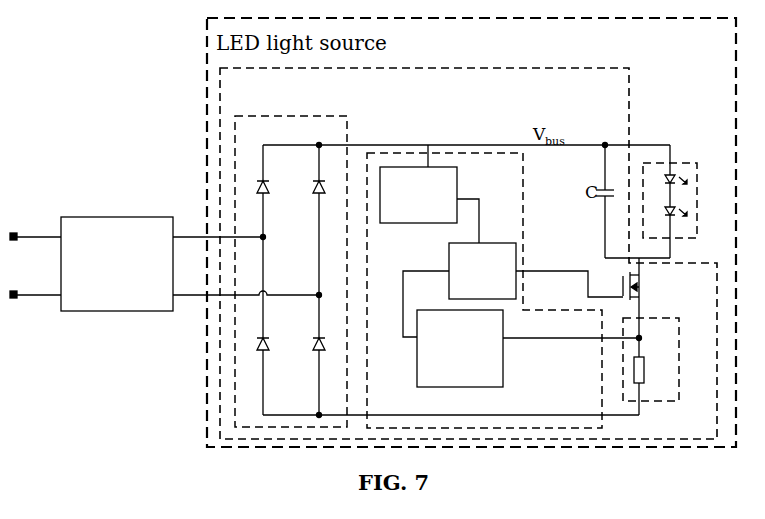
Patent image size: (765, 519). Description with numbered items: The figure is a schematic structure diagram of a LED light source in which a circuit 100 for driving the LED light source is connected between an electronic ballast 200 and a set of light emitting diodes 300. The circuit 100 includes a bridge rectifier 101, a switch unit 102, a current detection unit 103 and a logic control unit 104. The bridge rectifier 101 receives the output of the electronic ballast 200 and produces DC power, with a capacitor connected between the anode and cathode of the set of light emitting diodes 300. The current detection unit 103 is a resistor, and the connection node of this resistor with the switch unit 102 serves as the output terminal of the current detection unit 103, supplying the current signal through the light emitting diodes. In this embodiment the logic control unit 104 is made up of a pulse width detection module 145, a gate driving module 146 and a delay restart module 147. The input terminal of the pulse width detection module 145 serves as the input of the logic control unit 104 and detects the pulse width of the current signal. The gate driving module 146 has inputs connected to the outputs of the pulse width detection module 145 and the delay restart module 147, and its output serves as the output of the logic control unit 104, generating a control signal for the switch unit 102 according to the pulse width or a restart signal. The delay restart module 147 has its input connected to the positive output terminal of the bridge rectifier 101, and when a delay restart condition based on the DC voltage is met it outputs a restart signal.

The electronic ballast 200 is at (117, 217).
The circuit for driving LED light source 100 is at (629, 128).
The bridge rectifier 101 is at (350, 132).
The logic control unit 104 is at (523, 214).
The delay restart module 147 is at (458, 189).
The gate driving module 146 is at (449, 262).
The pulse width detection module 145 is at (503, 334).
The set of light emitting diodes 300 is at (697, 163).
The switch unit 102 is at (645, 293).
The current detection unit 103 is at (679, 341).